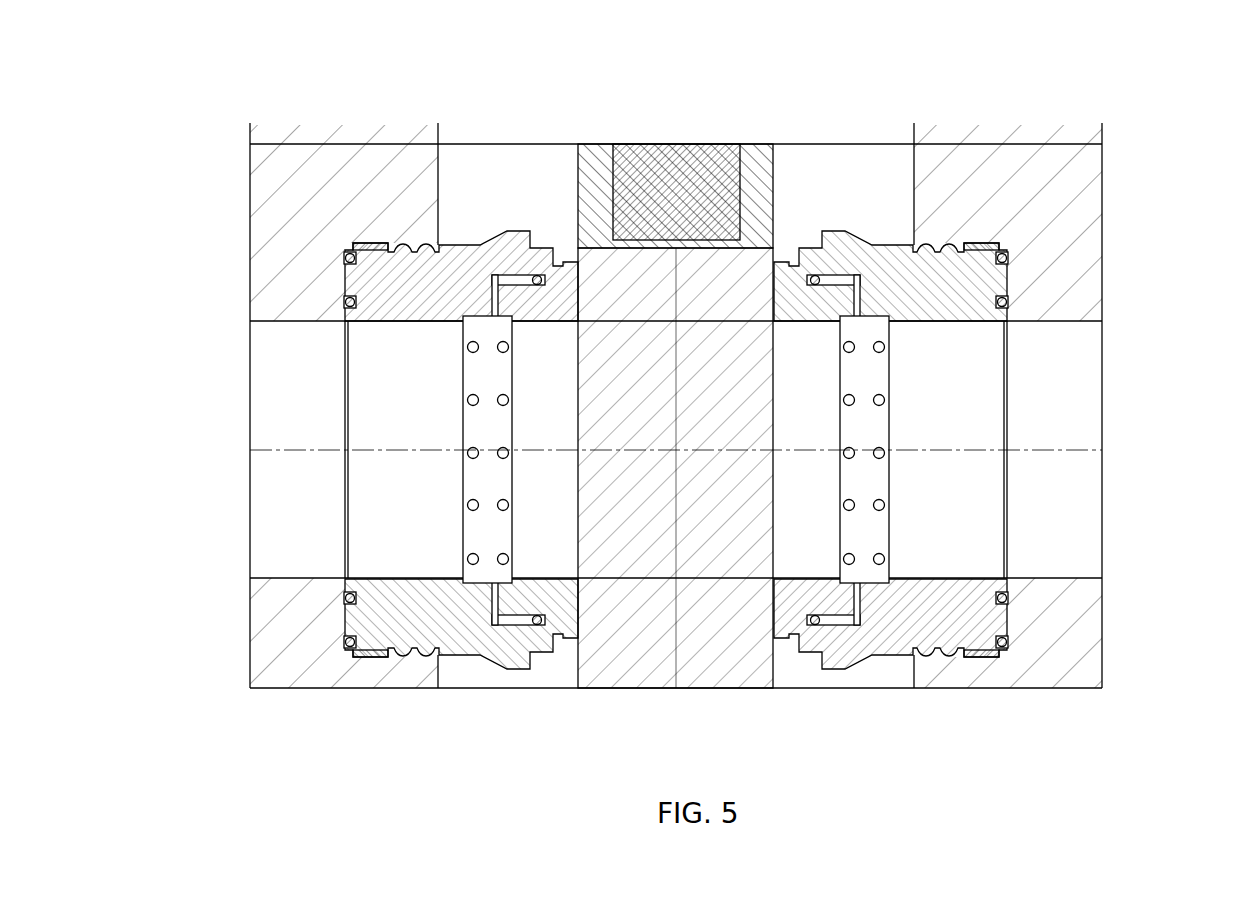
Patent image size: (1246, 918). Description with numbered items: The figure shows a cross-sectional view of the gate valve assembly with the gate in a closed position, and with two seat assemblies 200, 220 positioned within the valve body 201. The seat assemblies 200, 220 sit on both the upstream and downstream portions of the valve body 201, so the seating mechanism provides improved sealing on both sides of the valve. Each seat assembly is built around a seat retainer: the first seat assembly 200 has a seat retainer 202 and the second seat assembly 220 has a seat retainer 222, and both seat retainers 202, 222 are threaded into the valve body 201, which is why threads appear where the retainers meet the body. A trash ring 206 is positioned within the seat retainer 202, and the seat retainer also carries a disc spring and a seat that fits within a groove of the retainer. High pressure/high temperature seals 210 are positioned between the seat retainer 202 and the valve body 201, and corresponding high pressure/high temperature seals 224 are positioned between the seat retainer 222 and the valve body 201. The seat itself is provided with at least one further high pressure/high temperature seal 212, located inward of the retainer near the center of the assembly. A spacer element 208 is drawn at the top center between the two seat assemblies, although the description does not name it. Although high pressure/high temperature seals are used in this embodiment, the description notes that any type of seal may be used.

The seat assembly 200 is at (437, 684).
The valve body 201 is at (288, 262).
The seat retainer 202 is at (480, 262).
The trash ring 206 is at (494, 538).
The spacer 208 is at (590, 147).
The high pressure/high temperature seals 210 is at (345, 301).
The high pressure/high temperature seal 212 is at (539, 625).
The seat assembly 220 is at (891, 677).
The seat retainer 222 is at (987, 243).
The high pressure/high temperature seals 224 is at (1008, 300).